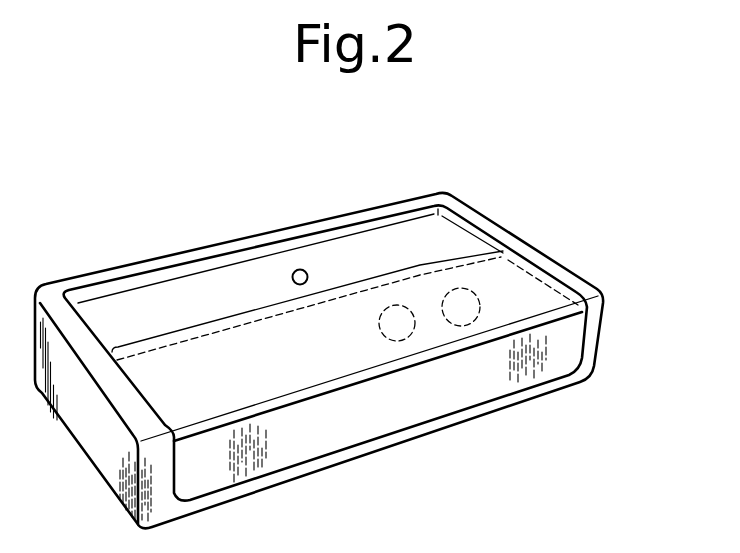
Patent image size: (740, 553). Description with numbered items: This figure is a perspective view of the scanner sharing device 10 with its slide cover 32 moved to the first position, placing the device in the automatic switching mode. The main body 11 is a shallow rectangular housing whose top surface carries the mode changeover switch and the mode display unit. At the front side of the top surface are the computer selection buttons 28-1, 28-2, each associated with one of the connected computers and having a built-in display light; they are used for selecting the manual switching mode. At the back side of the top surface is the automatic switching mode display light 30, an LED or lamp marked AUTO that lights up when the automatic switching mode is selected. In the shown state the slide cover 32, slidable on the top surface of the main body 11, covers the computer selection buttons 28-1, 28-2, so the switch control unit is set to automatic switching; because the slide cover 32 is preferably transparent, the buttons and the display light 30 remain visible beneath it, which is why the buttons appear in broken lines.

The scanner sharing device 10 is at (608, 176).
The main body 11 is at (496, 234).
The computer selection button 28-1 is at (398, 341).
The computer selection button 28-2 is at (461, 327).
The automatic switching mode display light 30 is at (292, 278).
The slide cover 32 is at (541, 296).